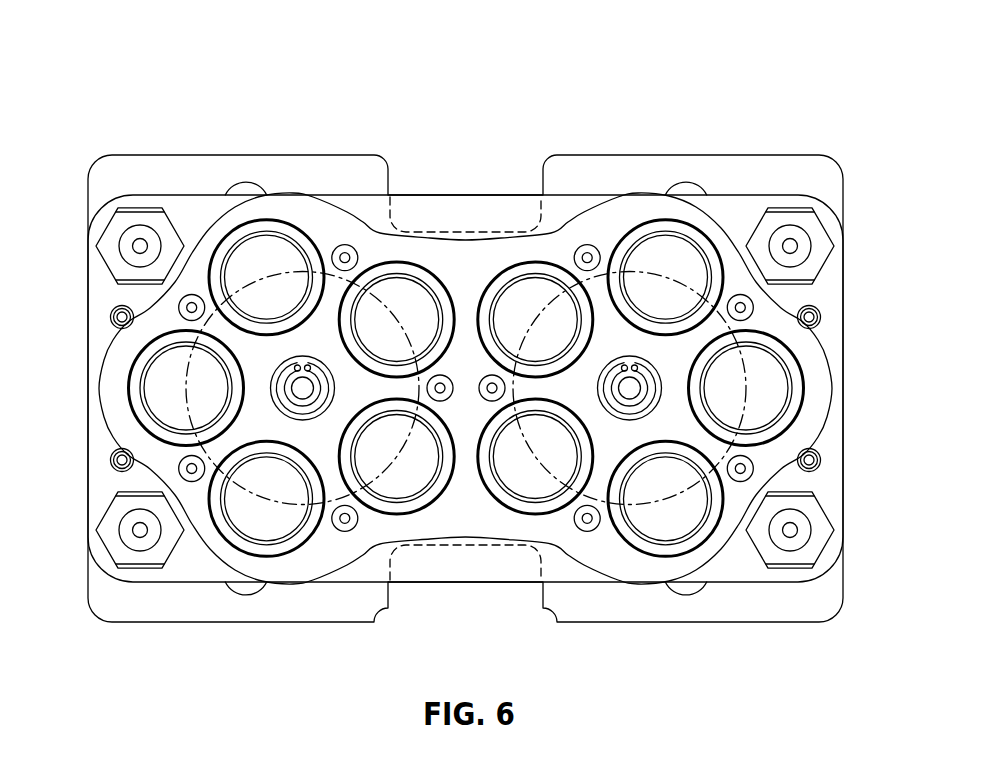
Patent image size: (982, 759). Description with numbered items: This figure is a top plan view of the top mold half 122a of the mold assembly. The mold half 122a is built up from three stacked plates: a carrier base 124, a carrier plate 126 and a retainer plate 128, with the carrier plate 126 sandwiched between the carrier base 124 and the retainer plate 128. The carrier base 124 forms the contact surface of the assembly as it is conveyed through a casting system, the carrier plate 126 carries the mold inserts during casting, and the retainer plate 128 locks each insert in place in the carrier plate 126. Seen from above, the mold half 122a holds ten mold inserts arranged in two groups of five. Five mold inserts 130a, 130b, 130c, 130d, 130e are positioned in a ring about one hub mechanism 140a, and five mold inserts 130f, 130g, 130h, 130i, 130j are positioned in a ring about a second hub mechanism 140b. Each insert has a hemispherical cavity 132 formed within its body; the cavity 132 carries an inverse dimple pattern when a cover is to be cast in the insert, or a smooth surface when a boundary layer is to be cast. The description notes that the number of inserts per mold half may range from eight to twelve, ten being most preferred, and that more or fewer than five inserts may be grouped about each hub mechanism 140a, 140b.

The mold half 122a is at (468, 350).
The carrier base 124 is at (145, 157).
The carrier plate 126 is at (478, 202).
The retainer plate 128 is at (350, 228).
The mold insert 130a is at (292, 222).
The mold insert 130b is at (422, 270).
The mold insert 130c is at (420, 512).
The mold insert 130d is at (297, 547).
The mold insert 130e is at (130, 387).
The mold insert 130f is at (552, 262).
The mold insert 130g is at (712, 238).
The mold insert 130h is at (797, 412).
The mold insert 130i is at (700, 543).
The mold insert 130j is at (523, 512).
The hemispherical cavity 132 is at (253, 270).
The hub mechanism 140a is at (270, 468).
The hub mechanism 140b is at (647, 303).